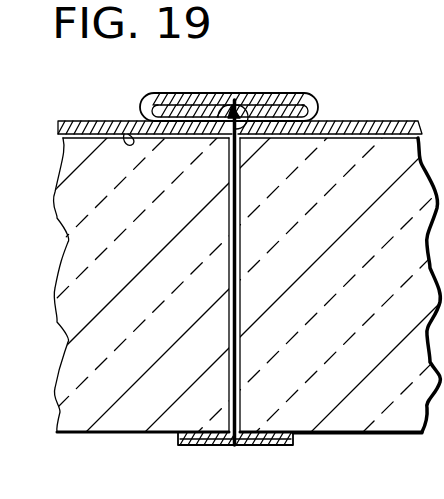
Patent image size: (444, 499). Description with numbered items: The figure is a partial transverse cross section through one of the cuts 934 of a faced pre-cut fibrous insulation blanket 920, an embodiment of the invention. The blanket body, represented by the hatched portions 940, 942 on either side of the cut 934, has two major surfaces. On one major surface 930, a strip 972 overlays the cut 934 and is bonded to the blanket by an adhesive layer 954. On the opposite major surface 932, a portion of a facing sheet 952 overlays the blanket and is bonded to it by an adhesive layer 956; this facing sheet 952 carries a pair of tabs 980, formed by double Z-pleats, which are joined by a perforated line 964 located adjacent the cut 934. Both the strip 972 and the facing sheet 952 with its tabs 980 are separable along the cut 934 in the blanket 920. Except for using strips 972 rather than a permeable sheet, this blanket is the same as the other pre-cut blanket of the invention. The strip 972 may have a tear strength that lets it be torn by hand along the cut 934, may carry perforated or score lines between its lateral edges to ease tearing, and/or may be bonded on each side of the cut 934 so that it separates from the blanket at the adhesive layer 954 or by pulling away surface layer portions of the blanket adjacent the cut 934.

The faced pre-cut fibrous insulation blanket 920 is at (398, 100).
The major surface 930 is at (378, 434).
The major surface 932 is at (349, 122).
The cut 934 is at (228, 354).
The first core block 940 is at (165, 297).
The second core block 942 is at (352, 298).
The facing sheet 952 is at (92, 115).
The adhesive layer 954 is at (199, 432).
The adhesive layer 956 is at (124, 134).
The perforated line 964 is at (258, 68).
The strip 972 is at (260, 443).
The tabs 980 is at (298, 77).